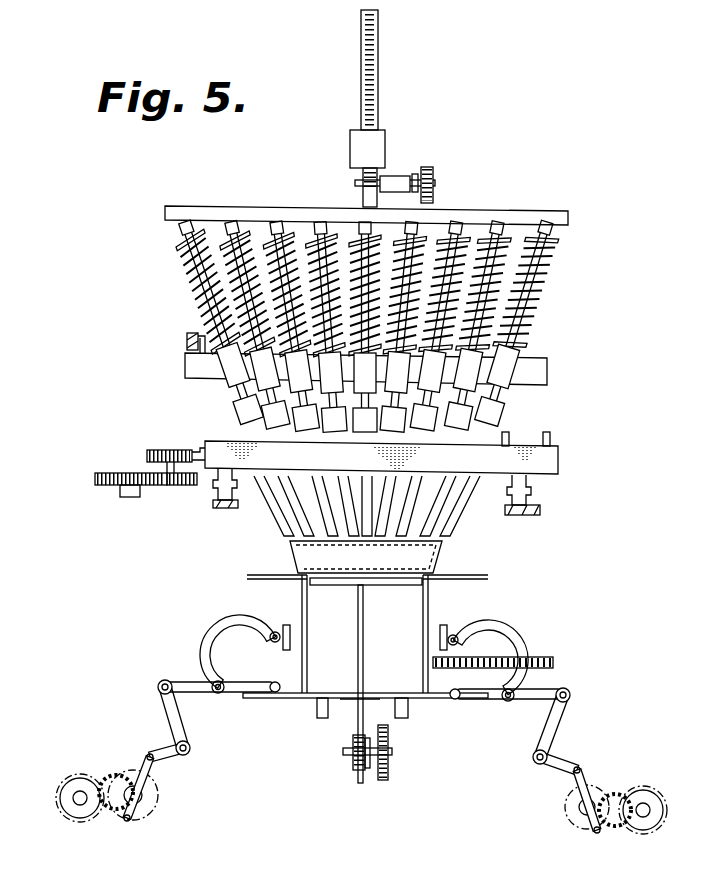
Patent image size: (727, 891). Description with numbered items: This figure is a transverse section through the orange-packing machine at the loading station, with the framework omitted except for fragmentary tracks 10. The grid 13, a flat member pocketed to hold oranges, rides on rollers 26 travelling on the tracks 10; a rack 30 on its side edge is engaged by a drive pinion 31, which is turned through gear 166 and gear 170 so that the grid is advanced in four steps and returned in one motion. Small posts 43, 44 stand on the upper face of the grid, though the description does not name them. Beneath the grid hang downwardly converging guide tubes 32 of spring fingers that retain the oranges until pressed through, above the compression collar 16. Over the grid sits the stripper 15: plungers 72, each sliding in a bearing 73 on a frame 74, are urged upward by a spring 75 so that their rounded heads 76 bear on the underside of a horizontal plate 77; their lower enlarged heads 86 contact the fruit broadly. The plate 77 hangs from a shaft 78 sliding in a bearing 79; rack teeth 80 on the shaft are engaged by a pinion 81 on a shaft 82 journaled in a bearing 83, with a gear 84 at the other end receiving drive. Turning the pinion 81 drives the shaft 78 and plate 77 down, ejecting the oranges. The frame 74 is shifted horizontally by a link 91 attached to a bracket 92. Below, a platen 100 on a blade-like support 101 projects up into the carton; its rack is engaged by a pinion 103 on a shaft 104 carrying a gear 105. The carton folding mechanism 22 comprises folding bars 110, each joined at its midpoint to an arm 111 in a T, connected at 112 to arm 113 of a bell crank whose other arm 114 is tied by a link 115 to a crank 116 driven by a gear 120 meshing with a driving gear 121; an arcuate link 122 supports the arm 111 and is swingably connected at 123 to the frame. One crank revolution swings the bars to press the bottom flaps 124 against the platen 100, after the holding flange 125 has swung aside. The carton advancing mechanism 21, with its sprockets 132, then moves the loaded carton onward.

The tracks 10 is at (228, 509).
The grid 13 is at (558, 460).
The stripper 15 is at (548, 315).
The compression collar 16 is at (435, 563).
The carton advancing mechanism 21 is at (546, 652).
The carton folding mechanism 22 is at (158, 707).
The rollers 26 is at (222, 505).
The rack 30 is at (201, 452).
The drive pinion 31 is at (172, 450).
The guide tubes 32 is at (348, 508).
The post 43 is at (552, 440).
The post 44 is at (510, 440).
The plungers 72 is at (240, 306).
The bearing 73 is at (242, 372).
The frame 74 is at (185, 366).
The spring 75 is at (238, 272).
The rounded heads 76 is at (364, 216).
The horizontal plate 77 is at (262, 214).
The shaft 78 is at (380, 52).
The bearing 79 is at (352, 141).
The rack teeth 80 is at (376, 78).
The pinion 81 is at (362, 180).
The shaft 82 is at (416, 178).
The bearing 83 is at (396, 176).
The gear 84 is at (434, 175).
The enlarged heads 86 is at (335, 425).
The link 91 is at (192, 335).
The bracket 92 is at (187, 345).
The platen 100 is at (378, 585).
The support 101 is at (358, 640).
The pinion 103 is at (352, 762).
The shaft 104 is at (372, 756).
The gear 105 is at (390, 770).
The folding bars 110 is at (274, 683).
The arm 111 is at (223, 681).
The connection 112 is at (165, 680).
The bell crank arm 113 is at (178, 712).
The bell crank arm 114 is at (166, 748).
The link 115 is at (146, 797).
The crank 116 is at (118, 812).
The gear 120 is at (152, 806).
The driving gear 121 is at (76, 814).
The arcuate link 122 is at (226, 620).
The connection 123 is at (278, 632).
The bottom flaps 124 is at (255, 699).
The holding flange 125 is at (365, 699).
The sprockets 132 is at (505, 657).
The gear 166 is at (98, 484).
The gear 170 is at (185, 486).